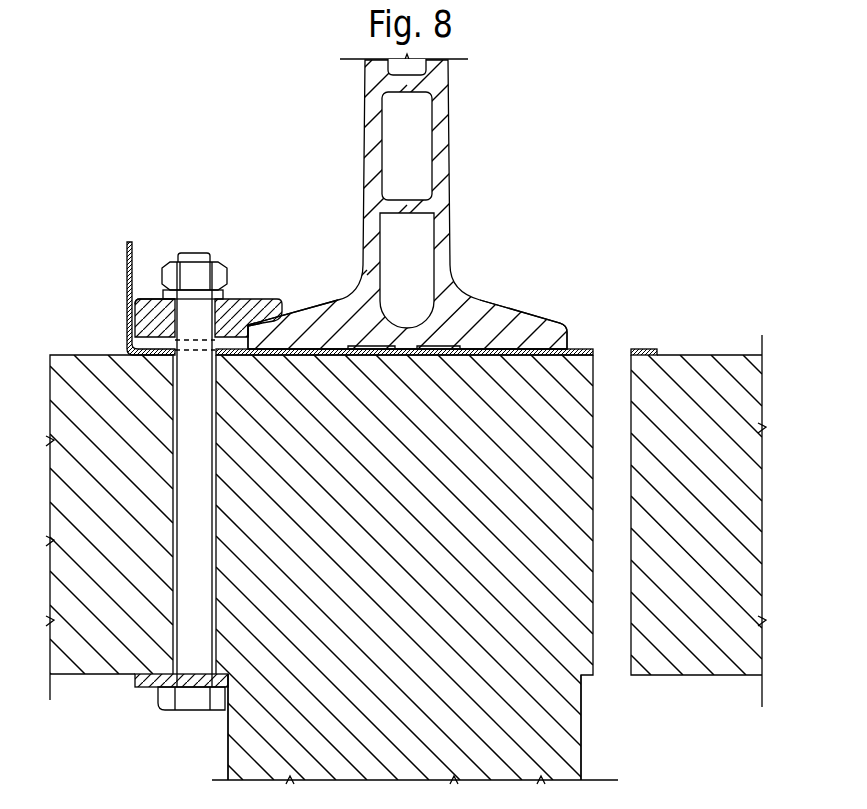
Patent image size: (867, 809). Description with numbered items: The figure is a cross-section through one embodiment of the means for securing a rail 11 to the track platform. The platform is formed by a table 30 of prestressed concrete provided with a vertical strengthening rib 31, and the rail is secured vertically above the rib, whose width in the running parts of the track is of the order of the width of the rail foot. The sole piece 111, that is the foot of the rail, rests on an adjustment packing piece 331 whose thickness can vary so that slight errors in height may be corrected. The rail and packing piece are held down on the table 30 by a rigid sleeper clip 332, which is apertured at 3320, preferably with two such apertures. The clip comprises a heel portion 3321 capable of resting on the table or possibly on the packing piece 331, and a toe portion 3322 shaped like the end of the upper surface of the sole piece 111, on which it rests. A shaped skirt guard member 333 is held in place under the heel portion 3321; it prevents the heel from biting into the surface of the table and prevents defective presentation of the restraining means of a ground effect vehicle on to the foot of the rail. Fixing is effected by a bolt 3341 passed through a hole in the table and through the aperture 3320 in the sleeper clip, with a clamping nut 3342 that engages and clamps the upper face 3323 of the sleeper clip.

The rail 11 is at (450, 151).
The sole piece 111 is at (307, 333).
The table 30 is at (87, 617).
The vertical strengthening rib 31 is at (545, 733).
The adjustment packing piece 331 is at (580, 349).
The sleeper clip 332 is at (227, 315).
The aperture 3320 is at (187, 332).
The heel portion 3321 is at (145, 337).
The toe portion 3322 is at (260, 310).
The upper face 3323 is at (147, 300).
The shaped skirt guard member 333 is at (127, 264).
The bolt 3341 is at (162, 700).
The clamping nut 3342 is at (200, 277).